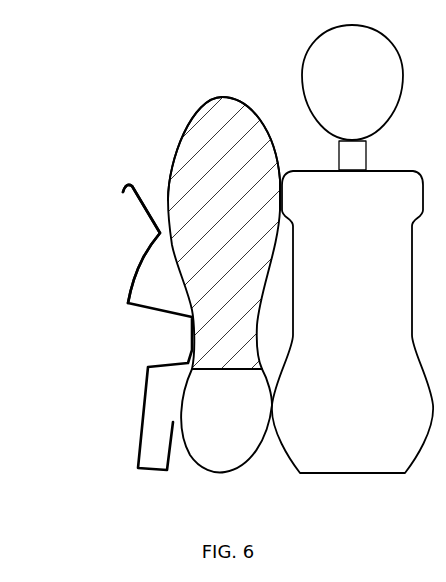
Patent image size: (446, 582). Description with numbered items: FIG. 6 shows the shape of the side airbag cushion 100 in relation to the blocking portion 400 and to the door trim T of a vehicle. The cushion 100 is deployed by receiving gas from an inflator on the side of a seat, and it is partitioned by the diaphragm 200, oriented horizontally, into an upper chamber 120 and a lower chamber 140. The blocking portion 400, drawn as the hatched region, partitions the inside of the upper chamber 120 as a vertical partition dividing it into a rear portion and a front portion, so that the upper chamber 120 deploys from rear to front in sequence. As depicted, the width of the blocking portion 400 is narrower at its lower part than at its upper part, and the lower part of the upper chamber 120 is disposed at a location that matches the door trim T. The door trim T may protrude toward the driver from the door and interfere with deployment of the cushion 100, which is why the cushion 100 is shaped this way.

The cushion 100 is at (175, 103).
The upper chamber 120 is at (232, 186).
The lower chamber 140 is at (238, 427).
The diaphragm 200 is at (222, 370).
The blocking portion 400 is at (202, 155).
The door trim T is at (127, 301).